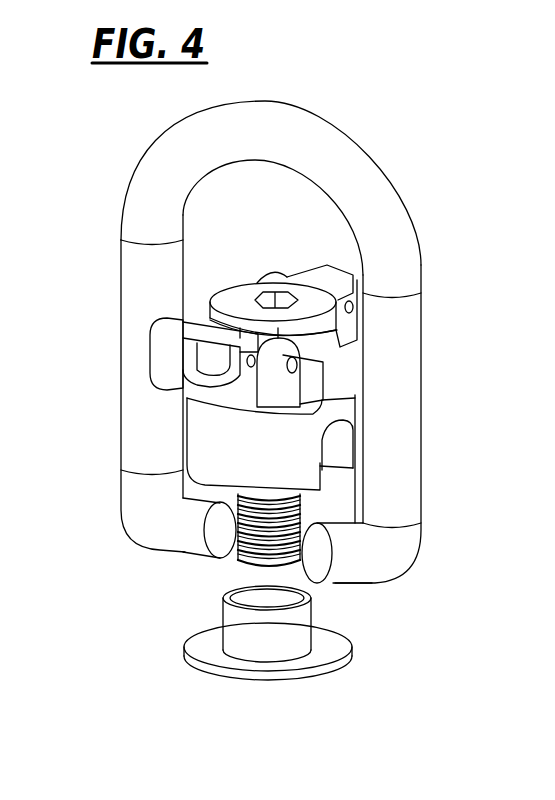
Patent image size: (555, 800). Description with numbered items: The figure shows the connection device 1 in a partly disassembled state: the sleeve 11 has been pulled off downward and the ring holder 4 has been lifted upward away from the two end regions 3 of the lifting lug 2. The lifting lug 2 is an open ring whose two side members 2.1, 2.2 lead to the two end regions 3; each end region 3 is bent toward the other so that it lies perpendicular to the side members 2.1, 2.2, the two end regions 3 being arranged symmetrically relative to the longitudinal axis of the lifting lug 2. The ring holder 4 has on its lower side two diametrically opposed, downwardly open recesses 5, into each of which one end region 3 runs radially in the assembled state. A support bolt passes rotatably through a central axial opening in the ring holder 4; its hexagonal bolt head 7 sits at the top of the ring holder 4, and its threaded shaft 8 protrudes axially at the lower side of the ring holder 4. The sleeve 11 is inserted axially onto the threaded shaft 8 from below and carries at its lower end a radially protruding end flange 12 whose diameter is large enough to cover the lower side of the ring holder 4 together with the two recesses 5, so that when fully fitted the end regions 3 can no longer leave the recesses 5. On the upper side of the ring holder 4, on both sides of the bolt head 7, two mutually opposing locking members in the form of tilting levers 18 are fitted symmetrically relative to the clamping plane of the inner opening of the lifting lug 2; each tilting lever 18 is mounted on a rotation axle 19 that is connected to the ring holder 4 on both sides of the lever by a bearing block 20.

The connection device 1 is at (428, 170).
The lifting lug 2 is at (168, 160).
The side member 2.1 is at (130, 316).
The side member 2.2 is at (410, 334).
The end region 3 is at (197, 530).
The ring holder 4 is at (295, 468).
The recess 5 is at (330, 446).
The bolt head 7 is at (235, 292).
The threaded shaft 8 is at (294, 510).
The sleeve 11 is at (186, 624).
The end flange 12 is at (336, 655).
The tilting lever 18 is at (330, 272).
The rotation axle 19 is at (251, 366).
The bearing block 20 is at (165, 348).